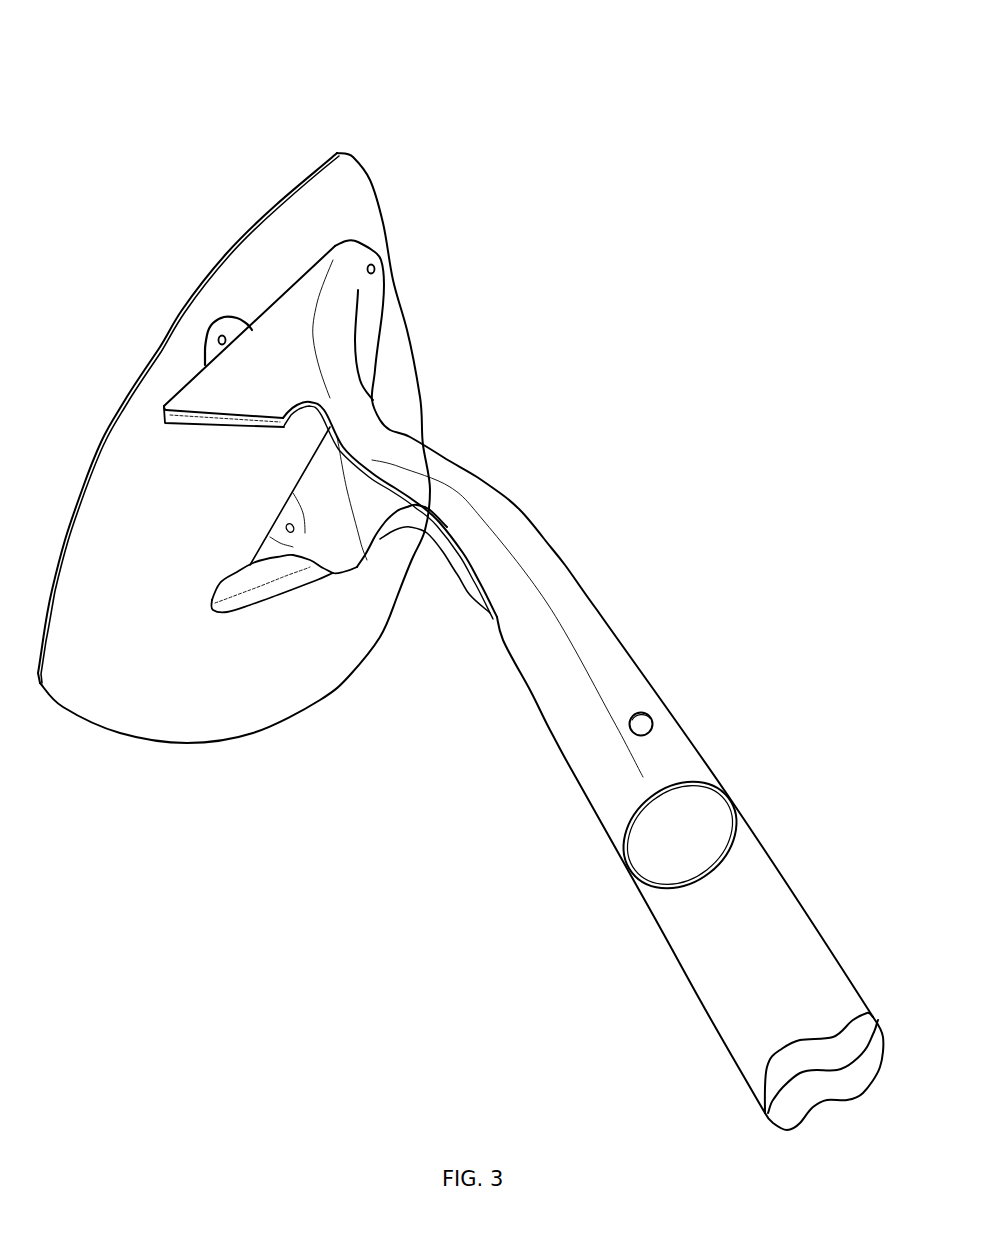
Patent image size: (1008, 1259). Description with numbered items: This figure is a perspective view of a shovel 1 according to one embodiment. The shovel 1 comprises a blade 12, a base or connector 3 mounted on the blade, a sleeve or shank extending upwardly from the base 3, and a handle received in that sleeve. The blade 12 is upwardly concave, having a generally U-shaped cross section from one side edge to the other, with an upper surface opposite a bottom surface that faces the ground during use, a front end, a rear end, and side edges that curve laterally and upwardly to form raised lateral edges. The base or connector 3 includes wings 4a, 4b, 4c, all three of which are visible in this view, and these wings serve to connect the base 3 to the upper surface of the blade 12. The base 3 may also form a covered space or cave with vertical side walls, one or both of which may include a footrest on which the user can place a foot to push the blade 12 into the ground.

The shovel 1 is at (367, 80).
The blade 12 is at (121, 380).
The base or connector 3 is at (366, 331).
The wing 4a is at (364, 253).
The wing 4b is at (208, 323).
The wing 4c is at (300, 537).